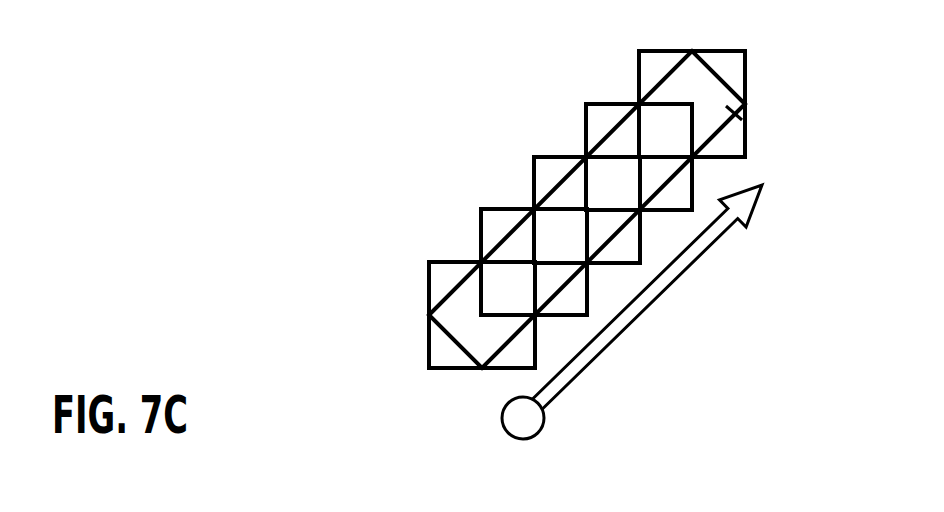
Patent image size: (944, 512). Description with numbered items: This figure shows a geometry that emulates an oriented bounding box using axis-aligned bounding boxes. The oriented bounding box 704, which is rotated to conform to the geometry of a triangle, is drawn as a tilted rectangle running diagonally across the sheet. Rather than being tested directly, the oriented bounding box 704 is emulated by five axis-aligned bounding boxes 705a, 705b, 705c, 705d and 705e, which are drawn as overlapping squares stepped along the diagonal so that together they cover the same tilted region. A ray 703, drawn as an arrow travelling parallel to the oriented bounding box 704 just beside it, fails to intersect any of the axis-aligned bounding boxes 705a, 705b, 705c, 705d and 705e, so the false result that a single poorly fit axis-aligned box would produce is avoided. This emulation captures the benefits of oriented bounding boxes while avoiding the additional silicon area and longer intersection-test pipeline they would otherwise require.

The axis-aligned bounding box 705a is at (638, 80).
The axis-aligned bounding box 705b is at (585, 123).
The axis-aligned bounding box 705c is at (533, 175).
The axis-aligned bounding box 705d is at (480, 230).
The axis-aligned bounding box 705e is at (427, 292).
The oriented bounding box 704 is at (737, 112).
The ray 703 is at (703, 252).